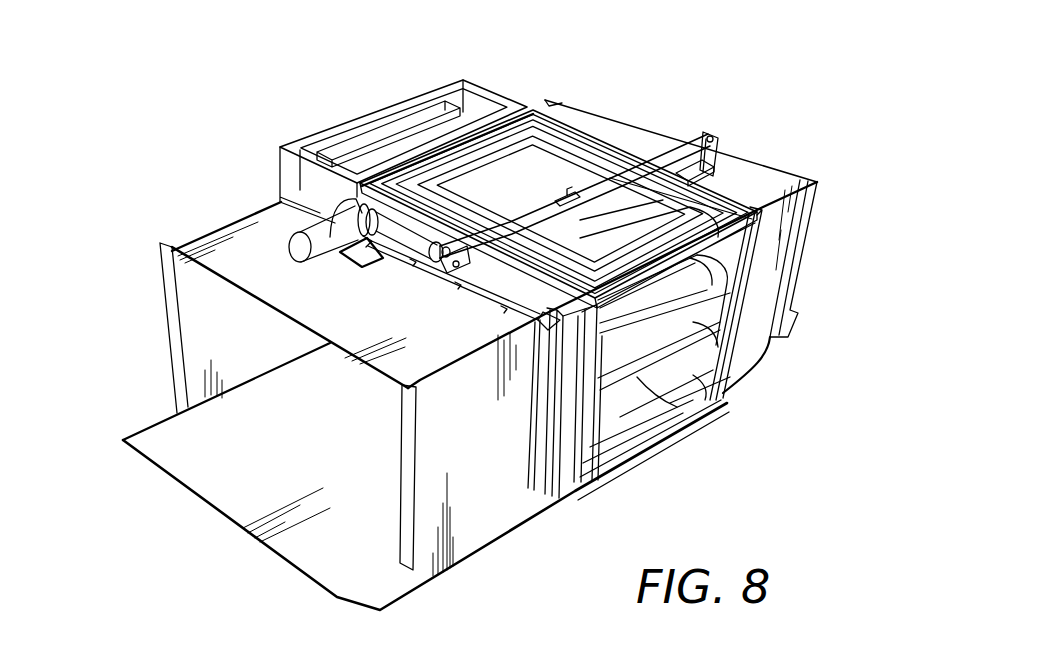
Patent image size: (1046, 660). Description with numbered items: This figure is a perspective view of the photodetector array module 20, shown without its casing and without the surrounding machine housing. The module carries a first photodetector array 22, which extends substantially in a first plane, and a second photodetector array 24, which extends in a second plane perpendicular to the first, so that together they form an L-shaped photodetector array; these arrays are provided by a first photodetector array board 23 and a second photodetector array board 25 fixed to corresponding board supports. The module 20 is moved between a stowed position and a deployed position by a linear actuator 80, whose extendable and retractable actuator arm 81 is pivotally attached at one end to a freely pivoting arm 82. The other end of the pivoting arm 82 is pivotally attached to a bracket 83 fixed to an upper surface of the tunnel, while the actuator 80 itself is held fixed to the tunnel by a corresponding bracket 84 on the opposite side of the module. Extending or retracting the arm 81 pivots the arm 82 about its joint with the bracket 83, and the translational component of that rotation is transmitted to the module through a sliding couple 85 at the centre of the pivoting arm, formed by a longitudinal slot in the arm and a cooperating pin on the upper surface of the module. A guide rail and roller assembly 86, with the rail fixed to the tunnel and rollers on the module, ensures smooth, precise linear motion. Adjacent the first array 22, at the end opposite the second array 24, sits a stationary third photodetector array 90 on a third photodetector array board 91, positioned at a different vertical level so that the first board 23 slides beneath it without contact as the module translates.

The photodetector array module 20 is at (207, 165).
The first photodetector array 22 is at (562, 158).
The first photodetector array board 23 is at (532, 200).
The second photodetector array 24 is at (686, 352).
The second photodetector array board 25 is at (645, 330).
The linear actuator 80 is at (299, 248).
The actuator arm 81 is at (440, 271).
The pivoting arm 82 is at (708, 133).
The bracket 83 is at (715, 163).
The bracket 84 is at (356, 254).
The sliding couple 85 is at (660, 136).
The guide rail and roller assembly 86 is at (498, 296).
The third photodetector array 90 is at (357, 136).
The third photodetector array board 91 is at (418, 112).